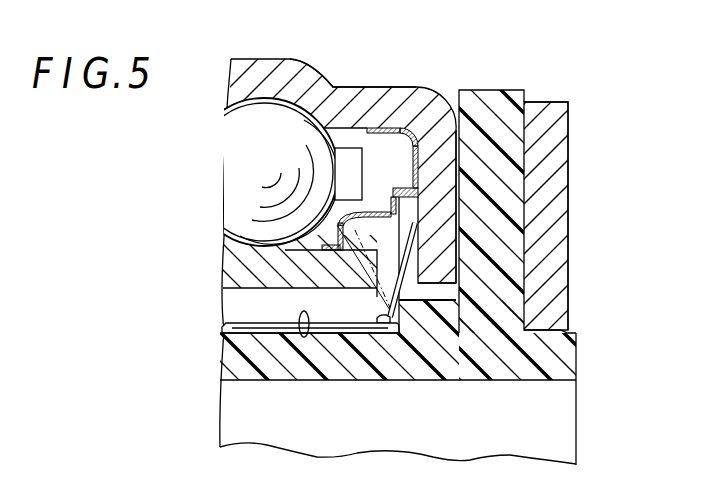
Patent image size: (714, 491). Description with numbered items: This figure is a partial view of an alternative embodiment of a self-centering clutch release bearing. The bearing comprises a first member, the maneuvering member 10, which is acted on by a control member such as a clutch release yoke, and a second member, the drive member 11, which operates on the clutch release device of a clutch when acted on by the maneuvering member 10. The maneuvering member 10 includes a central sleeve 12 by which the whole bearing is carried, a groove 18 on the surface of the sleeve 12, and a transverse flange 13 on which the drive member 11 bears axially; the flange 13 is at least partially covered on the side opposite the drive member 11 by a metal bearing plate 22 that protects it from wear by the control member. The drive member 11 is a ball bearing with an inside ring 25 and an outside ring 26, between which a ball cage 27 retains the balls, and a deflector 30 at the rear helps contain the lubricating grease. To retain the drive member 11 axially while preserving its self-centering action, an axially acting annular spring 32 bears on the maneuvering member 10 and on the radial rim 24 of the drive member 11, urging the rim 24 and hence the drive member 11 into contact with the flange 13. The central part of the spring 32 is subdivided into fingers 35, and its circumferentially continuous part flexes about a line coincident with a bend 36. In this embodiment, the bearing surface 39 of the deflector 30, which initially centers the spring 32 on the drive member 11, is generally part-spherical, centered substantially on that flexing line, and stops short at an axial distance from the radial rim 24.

The maneuvering member 10 is at (586, 154).
The drive member 11 is at (337, 66).
The central sleeve 12 is at (230, 376).
The transverse flange 13 is at (485, 98).
The groove 18 is at (300, 340).
The plate 22 is at (545, 110).
The radial rim 24 is at (456, 186).
The inside ring 25 is at (232, 288).
The outside ring 26 is at (291, 77).
The ball cage 27 is at (350, 155).
The deflector 30 is at (404, 121).
The annular spring 32 is at (394, 272).
The fingers 35 is at (337, 327).
The bend 36 is at (385, 325).
The bearing surface 39 is at (371, 212).